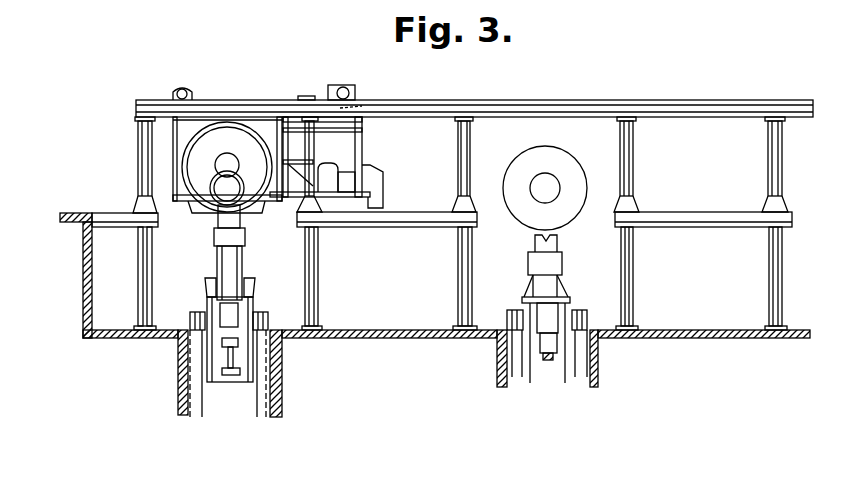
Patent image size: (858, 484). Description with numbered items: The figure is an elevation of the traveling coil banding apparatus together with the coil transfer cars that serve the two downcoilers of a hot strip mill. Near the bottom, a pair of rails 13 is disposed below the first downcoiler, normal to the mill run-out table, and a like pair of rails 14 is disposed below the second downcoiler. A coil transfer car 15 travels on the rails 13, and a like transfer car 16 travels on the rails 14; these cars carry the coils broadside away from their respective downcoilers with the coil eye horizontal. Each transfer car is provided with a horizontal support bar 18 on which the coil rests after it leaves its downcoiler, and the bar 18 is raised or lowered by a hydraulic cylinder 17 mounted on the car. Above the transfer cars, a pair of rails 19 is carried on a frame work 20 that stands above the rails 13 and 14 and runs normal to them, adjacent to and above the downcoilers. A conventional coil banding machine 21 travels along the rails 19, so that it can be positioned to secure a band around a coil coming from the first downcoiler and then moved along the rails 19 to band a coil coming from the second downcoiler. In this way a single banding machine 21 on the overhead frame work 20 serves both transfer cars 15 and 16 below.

The pair of rails 13 is at (190, 318).
The pair of rails 14 is at (507, 320).
The coil transfer car 15 is at (245, 297).
The transfer car 16 is at (562, 275).
The hydraulic cylinder 17 is at (230, 343).
The horizontal support bar 18 is at (535, 242).
The pair of rails 19 is at (423, 101).
The frame work 20 is at (138, 164).
The coil banding machine 21 is at (360, 157).